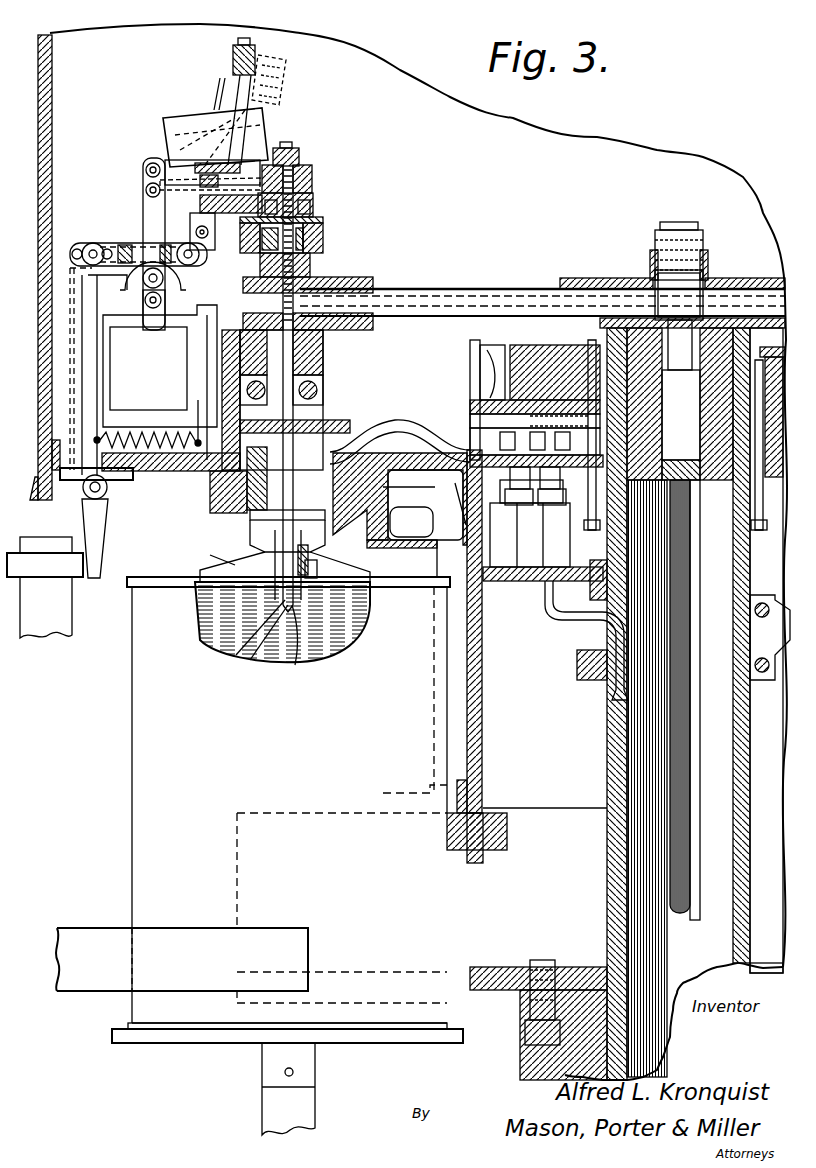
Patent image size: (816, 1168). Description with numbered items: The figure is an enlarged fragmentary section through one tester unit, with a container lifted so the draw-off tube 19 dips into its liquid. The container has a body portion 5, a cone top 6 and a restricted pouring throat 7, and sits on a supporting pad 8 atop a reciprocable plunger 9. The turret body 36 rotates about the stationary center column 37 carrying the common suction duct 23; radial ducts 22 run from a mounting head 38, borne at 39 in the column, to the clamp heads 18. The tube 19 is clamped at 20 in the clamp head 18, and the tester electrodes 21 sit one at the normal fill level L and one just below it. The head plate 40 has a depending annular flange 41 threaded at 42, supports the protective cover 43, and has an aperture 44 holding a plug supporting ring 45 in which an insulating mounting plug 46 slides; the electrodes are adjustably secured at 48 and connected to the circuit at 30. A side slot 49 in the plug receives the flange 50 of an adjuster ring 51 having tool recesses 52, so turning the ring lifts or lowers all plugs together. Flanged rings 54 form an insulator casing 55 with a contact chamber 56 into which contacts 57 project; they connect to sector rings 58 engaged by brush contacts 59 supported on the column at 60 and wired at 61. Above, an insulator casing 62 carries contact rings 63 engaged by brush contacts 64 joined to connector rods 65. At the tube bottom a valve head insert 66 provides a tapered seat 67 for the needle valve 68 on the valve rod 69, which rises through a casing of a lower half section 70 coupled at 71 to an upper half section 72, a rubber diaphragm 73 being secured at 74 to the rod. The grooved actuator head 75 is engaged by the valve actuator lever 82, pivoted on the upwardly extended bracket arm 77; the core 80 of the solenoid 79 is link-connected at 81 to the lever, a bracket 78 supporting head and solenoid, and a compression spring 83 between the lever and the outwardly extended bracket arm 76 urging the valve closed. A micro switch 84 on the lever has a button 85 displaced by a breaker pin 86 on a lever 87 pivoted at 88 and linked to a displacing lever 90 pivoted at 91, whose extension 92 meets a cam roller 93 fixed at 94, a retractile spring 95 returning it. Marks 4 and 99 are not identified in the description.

The arrow / armature stop 4 is at (196, 484).
The body portion 5 is at (145, 805).
The cone top 6 is at (215, 566).
The restricted pouring throat 7 is at (250, 535).
The supporting pad 8 is at (163, 1040).
The plunger 9 is at (272, 1110).
The clamp head 18 is at (323, 338).
The draw-off tube 19 is at (270, 570).
The clamp 20 is at (310, 378).
The tester electrodes 21 is at (331, 572).
The radial suction ducts 22 is at (425, 291).
The common suction duct 23 is at (672, 712).
The control circuit connection 30 is at (372, 420).
The turret body 36 is at (578, 1055).
The stationary center column 37 is at (628, 775).
The mounting head 38 is at (572, 285).
The rotatable bearing 39 is at (610, 285).
The head plate 40 is at (408, 448).
The depending annular flange 41 is at (425, 500).
The external threads 42 is at (376, 524).
The protective cover 43 is at (52, 62).
The aperture 44 is at (205, 440).
The plug supporting ring 45 is at (220, 495).
The insulating mounting plug 46 is at (232, 505).
The electrode adjustable securing 48 is at (308, 556).
The side slot 49 is at (330, 430).
The flange 50 is at (362, 470).
The adjuster ring 51 is at (365, 550).
The tool receiving recesses 52 is at (368, 582).
The flanged rings 54 is at (482, 428).
The insulator casing 55 is at (472, 395).
The contact chamber 56 is at (472, 447).
The contacts 57 is at (468, 510).
The sector rings 58 is at (545, 475).
The brush contacts 59 is at (545, 495).
The brush support 60 is at (520, 582).
The control circuit connection 61 is at (555, 618).
The annular insulator casing 62 is at (475, 362).
The contact rings 63 is at (505, 360).
The brush contacts 64 is at (540, 355).
The connector rods 65 is at (582, 512).
The valve head insert 66 is at (236, 655).
The tapered seat 67 is at (262, 648).
The needle valve 68 is at (295, 665).
The valve rod 69 is at (345, 290).
The lower casing half section 70 is at (312, 268).
The coupling 71 is at (323, 240).
The upper casing half section 72 is at (312, 208).
The rubber diaphragm 73 is at (318, 218).
The diaphragm securing 74 is at (312, 198).
The grooved actuator head 75 is at (305, 185).
The outwardly extended bracket arm 76 is at (226, 222).
The upwardly extended bracket arm 77 is at (300, 156).
The bracket 78 is at (222, 365).
The solenoid 79 is at (148, 368).
The core 80 is at (157, 315).
The link connection 81 is at (145, 200).
The valve actuator lever 82 is at (178, 176).
The block 83 is at (215, 165).
The micro switch 84 is at (175, 118).
The switch control button 85 is at (232, 100).
The breaker pin 86 is at (250, 55).
The lever 87 is at (234, 64).
The pivot 88 is at (190, 212).
The breaker pin displacing lever 90 is at (80, 298).
The pivot 91 is at (83, 487).
The lower end extension 92 is at (101, 537).
The cam roller 93 is at (72, 578).
The stationary support 94 is at (72, 628).
The retractile spring 95 is at (142, 438).
The pin 99 is at (108, 245).
The normal fill level L is at (205, 604).